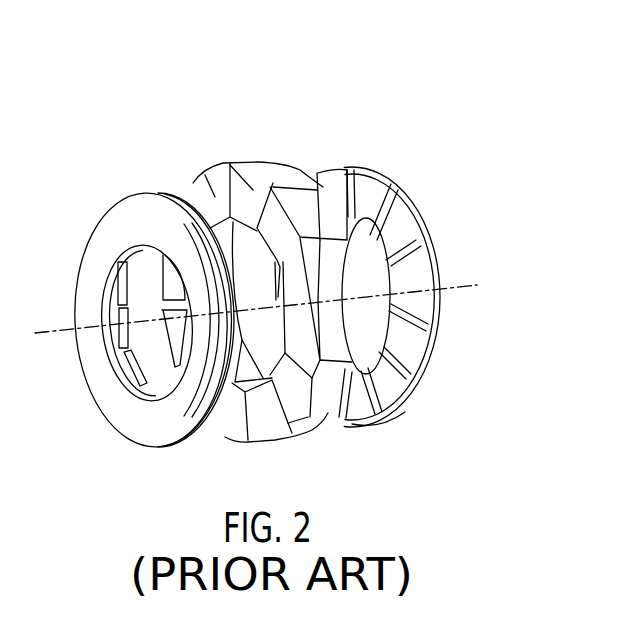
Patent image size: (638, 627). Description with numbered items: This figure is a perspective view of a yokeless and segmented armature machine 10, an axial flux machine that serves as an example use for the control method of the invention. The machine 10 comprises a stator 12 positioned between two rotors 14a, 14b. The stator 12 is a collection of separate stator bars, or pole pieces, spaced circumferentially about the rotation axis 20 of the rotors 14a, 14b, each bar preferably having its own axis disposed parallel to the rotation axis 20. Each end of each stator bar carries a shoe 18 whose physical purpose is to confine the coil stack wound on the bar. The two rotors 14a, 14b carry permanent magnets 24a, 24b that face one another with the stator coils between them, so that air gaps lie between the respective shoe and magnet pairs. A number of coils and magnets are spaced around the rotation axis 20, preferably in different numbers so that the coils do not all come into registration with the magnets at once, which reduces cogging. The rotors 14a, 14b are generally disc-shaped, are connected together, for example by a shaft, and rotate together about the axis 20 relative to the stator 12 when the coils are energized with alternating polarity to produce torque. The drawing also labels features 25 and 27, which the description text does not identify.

The yokeless and segmented armature machine 10 is at (218, 60).
The stator 12 is at (280, 162).
The rotor 14a is at (138, 192).
The rotor 14b is at (385, 168).
The shoe 18 is at (265, 423).
The rotation axis 20 is at (48, 337).
The permanent magnet 24a is at (223, 425).
The permanent magnet 24b is at (408, 402).
The spokes 25 is at (410, 228).
The roller facets 27 is at (233, 163).